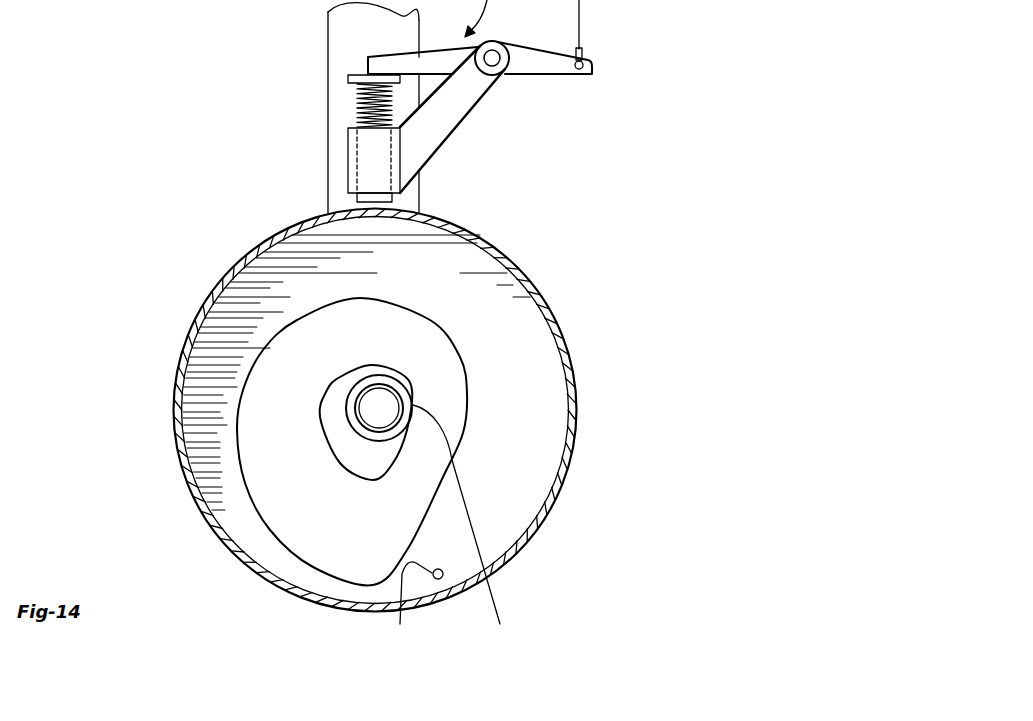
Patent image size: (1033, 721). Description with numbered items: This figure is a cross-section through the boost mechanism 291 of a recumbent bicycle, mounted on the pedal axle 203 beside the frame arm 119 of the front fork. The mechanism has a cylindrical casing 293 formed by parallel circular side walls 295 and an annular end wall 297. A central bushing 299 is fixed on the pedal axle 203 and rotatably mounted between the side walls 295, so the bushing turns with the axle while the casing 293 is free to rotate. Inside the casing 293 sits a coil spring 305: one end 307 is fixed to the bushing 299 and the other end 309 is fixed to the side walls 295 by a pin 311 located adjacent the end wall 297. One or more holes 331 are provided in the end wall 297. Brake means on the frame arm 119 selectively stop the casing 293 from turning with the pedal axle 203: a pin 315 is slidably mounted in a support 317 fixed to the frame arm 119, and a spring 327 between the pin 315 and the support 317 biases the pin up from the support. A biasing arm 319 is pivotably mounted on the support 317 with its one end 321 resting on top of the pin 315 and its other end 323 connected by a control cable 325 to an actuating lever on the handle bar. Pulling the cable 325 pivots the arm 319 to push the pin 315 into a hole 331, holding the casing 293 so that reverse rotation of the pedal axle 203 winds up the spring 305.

The frame arm 119 is at (337, 32).
The end of biasing arm 321 is at (366, 56).
The pin 315 is at (348, 80).
The spring 327 is at (353, 107).
The support 317 is at (348, 159).
The control cable 325 is at (582, 21).
The other end of biasing arm 323 is at (593, 70).
The biasing arm 319 is at (527, 78).
The holes 331 is at (128, 262).
The boost mechanism 291 is at (586, 288).
The cylindrical casing 293 is at (570, 322).
The annular end wall 297 is at (577, 418).
The circular side walls 295 is at (520, 430).
The coil spring 305 is at (240, 378).
The pedal axle 203 is at (346, 407).
The central bushing 299 is at (377, 441).
The other end of coil spring 309 is at (407, 605).
The pin 311 is at (441, 579).
The end of coil spring 307 is at (465, 527).